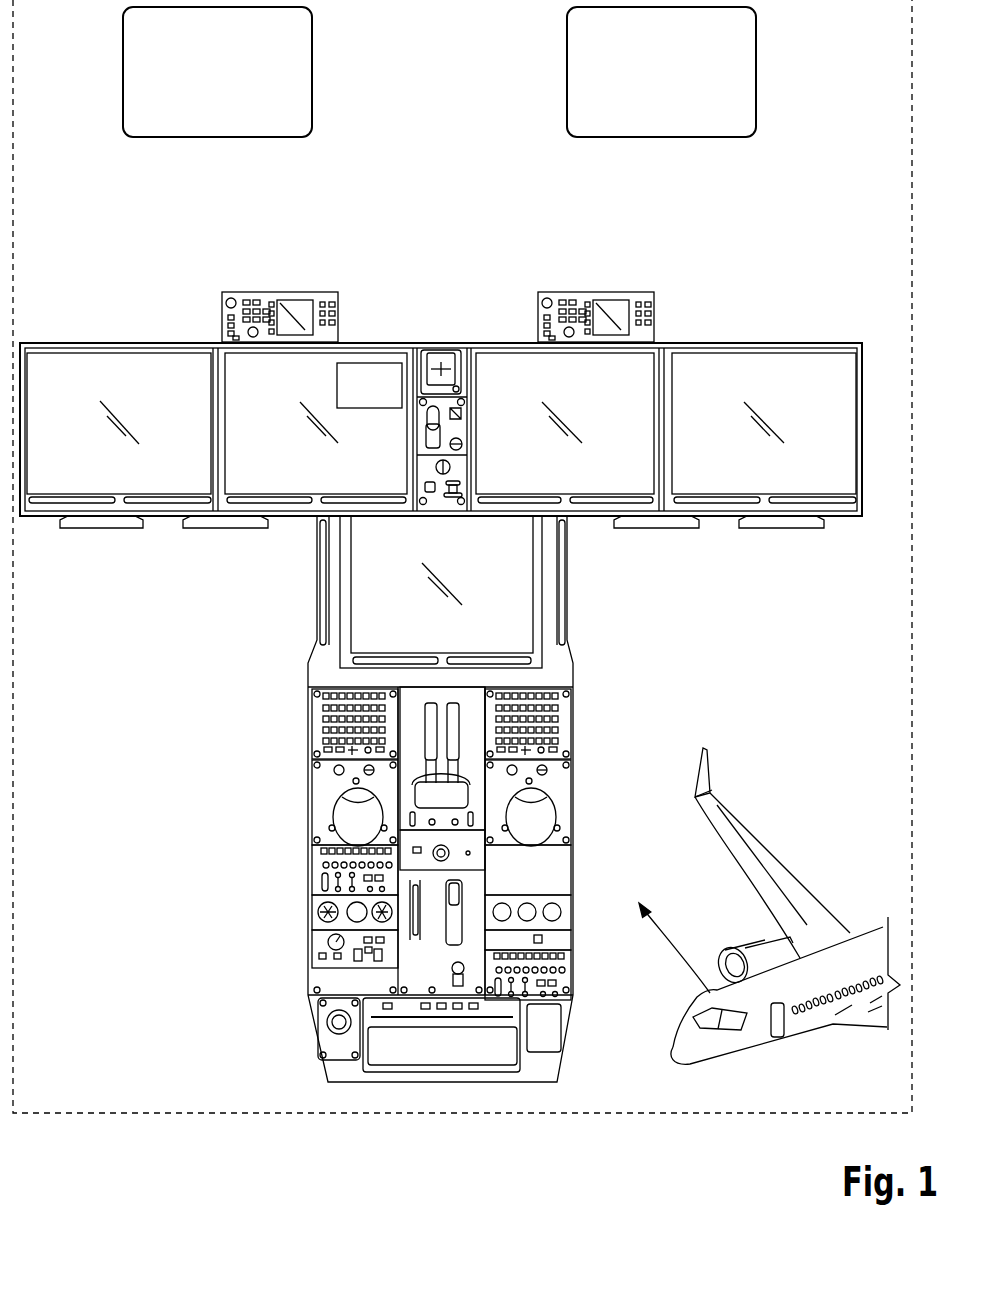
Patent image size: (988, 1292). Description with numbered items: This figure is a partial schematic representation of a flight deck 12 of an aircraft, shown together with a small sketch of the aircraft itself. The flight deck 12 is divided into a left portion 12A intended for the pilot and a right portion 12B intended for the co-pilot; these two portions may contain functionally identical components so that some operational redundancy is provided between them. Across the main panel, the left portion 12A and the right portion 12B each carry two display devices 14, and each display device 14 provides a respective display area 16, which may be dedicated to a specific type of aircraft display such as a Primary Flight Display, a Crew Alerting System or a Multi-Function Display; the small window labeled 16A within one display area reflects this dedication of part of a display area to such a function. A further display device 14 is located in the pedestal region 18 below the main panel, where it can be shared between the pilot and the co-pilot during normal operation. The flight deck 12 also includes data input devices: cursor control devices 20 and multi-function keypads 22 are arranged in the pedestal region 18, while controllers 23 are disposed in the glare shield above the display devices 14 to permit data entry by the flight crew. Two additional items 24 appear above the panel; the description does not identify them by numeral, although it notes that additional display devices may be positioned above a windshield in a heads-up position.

The flight deck 12 is at (795, 322).
The left portion 12A is at (179, 622).
The right portion 12B is at (777, 622).
The display device 14 is at (49, 378).
The display area 16 is at (193, 473).
The crew alerting system window 16A is at (370, 363).
The pedestal region 18 is at (290, 906).
The cursor control device 20 is at (319, 797).
The multi-function keypad 22 is at (317, 723).
The controller 23 is at (277, 300).
The overhead display 24 is at (298, 50).